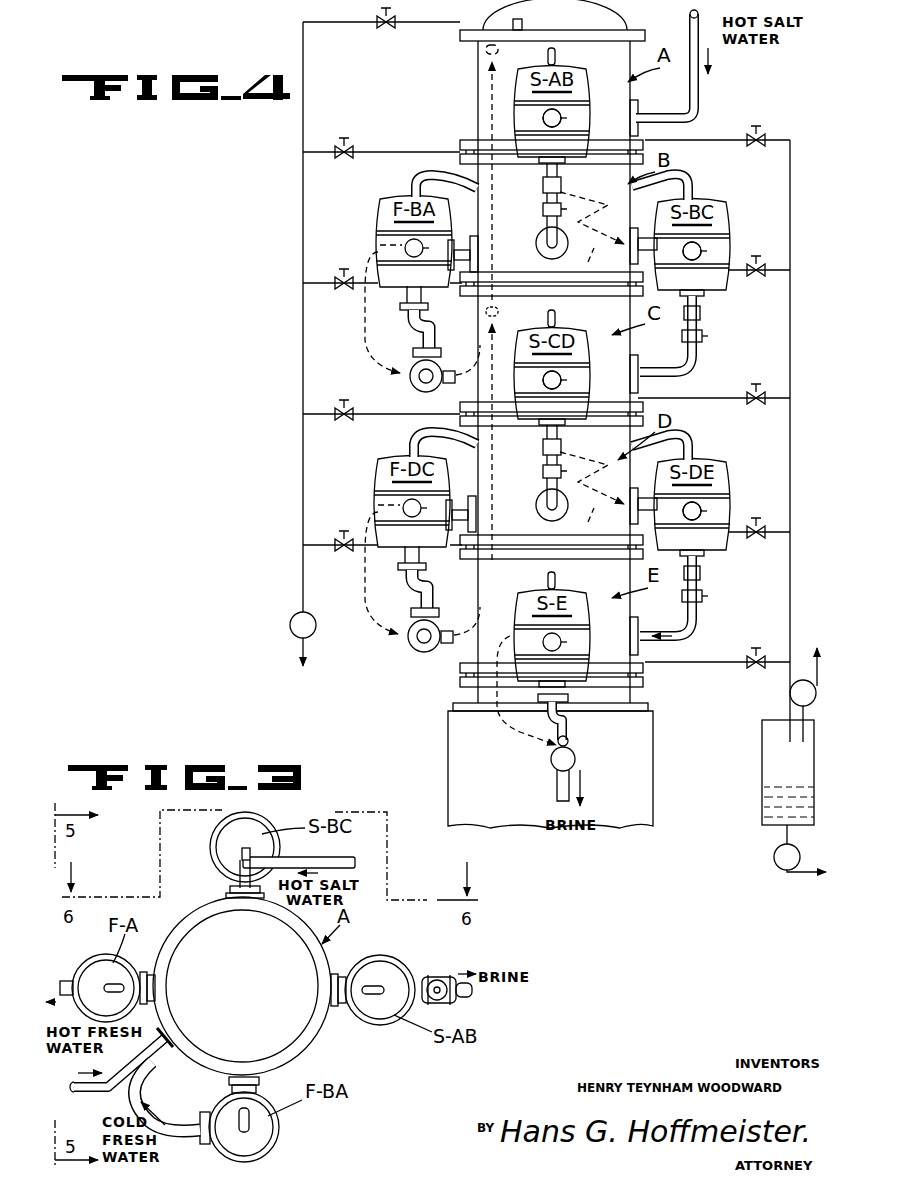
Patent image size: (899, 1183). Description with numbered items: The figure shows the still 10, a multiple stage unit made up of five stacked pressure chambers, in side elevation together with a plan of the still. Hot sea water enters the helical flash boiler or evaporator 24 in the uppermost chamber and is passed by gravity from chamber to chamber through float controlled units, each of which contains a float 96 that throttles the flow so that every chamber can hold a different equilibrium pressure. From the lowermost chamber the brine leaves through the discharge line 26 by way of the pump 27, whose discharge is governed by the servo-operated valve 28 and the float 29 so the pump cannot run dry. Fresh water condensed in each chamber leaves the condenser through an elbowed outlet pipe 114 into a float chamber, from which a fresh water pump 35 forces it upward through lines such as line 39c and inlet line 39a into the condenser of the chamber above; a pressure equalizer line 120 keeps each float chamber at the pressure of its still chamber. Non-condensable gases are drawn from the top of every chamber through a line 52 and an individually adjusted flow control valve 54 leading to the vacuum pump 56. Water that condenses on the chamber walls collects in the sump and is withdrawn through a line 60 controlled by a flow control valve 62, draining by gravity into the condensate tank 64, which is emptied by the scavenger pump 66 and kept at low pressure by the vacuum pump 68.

In FIG. 4, the still 10 is at (290, 33).
In FIG. 3, the still 10 is at (348, 945).
In FIG. 4, the helical flash boiler or evaporator 24 is at (592, 364).
In FIG. 4, the discharge line 26 is at (562, 775).
In FIG. 4, the pump 27 is at (566, 723).
In FIG. 4, the servo-operated valve 28 is at (556, 755).
In FIG. 4, the float 29 is at (546, 628).
In FIG. 4, the fresh water pump 35 is at (410, 320).
In FIG. 4, the inlet line 39a is at (491, 107).
In FIG. 4, the line 39c is at (501, 455).
In FIG. 4, the line 52 is at (445, 27).
In FIG. 4, the flow control valve 54 is at (383, 30).
In FIG. 4, the vacuum pump 56 is at (290, 625).
In FIG. 4, the line 60 is at (712, 141).
In FIG. 4, the flow control valve 62 is at (762, 136).
In FIG. 4, the condensate tank 64 is at (762, 752).
In FIG. 4, the scavenger pump 66 is at (774, 857).
In FIG. 4, the vacuum pump 68 is at (790, 693).
In FIG. 4, the float 96 is at (566, 119).
In FIG. 4, the elbowed outlet pipe 114 is at (470, 258).
In FIG. 4, the pressure equalizer line 120 is at (556, 55).